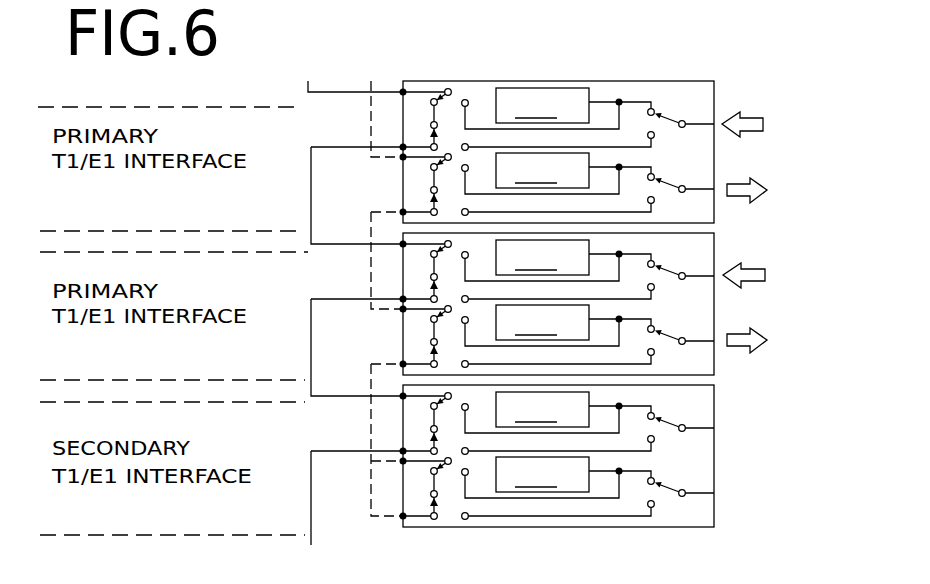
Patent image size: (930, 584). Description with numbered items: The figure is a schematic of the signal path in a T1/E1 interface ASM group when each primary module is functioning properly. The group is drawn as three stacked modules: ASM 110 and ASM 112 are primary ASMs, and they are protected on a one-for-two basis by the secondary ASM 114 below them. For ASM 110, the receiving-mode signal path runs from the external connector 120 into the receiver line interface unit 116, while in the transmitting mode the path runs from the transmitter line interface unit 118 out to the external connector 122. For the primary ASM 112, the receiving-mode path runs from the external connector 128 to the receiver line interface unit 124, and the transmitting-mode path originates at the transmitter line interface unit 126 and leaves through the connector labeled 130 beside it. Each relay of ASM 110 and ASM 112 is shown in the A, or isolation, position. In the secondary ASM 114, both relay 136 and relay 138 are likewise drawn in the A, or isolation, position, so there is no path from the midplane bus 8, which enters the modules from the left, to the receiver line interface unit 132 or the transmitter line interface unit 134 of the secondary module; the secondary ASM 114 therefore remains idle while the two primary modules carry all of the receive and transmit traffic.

The midplane bus 8 is at (333, 92).
The ASM 110 is at (600, 152).
The ASM 112 is at (600, 304).
The secondary ASM 114 is at (572, 449).
The receiver line interface unit 116 is at (542, 105).
The transmitter line interface unit 118 is at (542, 170).
The external connector 120 is at (717, 112).
The external connector 122 is at (717, 200).
The receiver line interface unit 124 is at (542, 257).
The transmitter line interface unit 126 is at (542, 322).
The external connector 128 is at (754, 265).
The transmit direction arrow 130 is at (766, 336).
The receiver line interface unit 132 is at (542, 409).
The transmitter line interface unit 134 is at (542, 474).
The relay 136 is at (535, 395).
The relay 138 is at (557, 511).